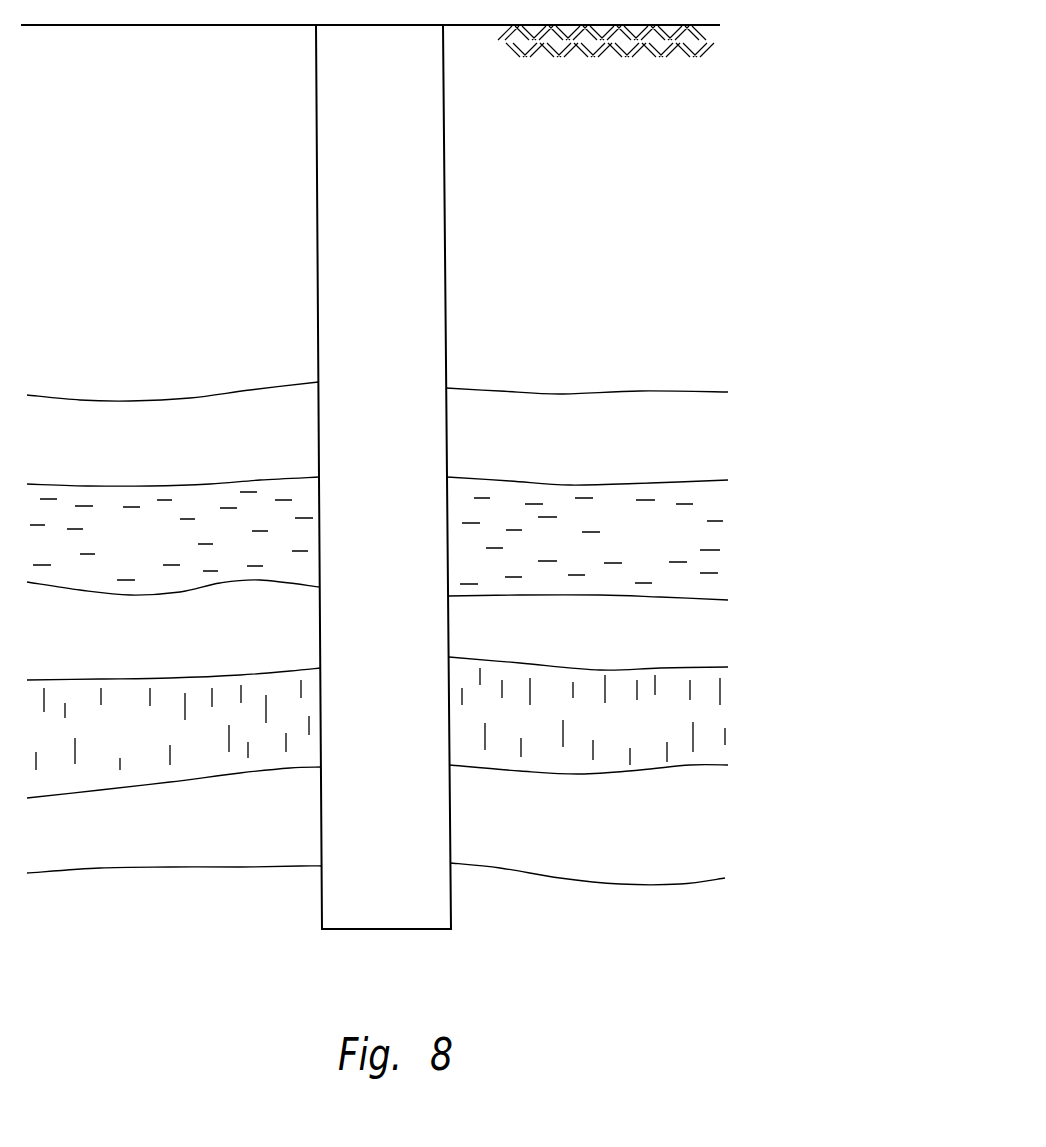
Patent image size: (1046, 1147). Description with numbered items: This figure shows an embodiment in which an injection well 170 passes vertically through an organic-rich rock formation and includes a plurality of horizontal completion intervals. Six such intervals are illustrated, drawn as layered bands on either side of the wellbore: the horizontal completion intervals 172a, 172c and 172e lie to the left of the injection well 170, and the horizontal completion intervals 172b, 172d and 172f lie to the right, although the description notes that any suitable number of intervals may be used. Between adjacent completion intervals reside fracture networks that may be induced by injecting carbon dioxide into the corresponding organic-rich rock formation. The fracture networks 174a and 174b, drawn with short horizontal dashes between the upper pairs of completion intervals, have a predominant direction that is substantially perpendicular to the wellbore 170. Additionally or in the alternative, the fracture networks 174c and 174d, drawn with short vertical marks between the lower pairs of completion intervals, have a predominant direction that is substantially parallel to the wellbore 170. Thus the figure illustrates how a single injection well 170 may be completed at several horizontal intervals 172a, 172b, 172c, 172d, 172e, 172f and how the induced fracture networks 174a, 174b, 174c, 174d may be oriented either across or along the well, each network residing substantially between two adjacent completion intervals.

The injection well 170 is at (425, 233).
The horizontal completion interval 172a is at (152, 453).
The horizontal completion interval 172b is at (663, 453).
The horizontal completion interval 172c is at (152, 650).
The horizontal completion interval 172d is at (663, 650).
The horizontal completion interval 172e is at (152, 840).
The horizontal completion interval 172f is at (663, 840).
The fracture network 174a is at (152, 548).
The fracture network 174b is at (663, 548).
The fracture network 174c is at (152, 741).
The fracture network 174d is at (663, 741).